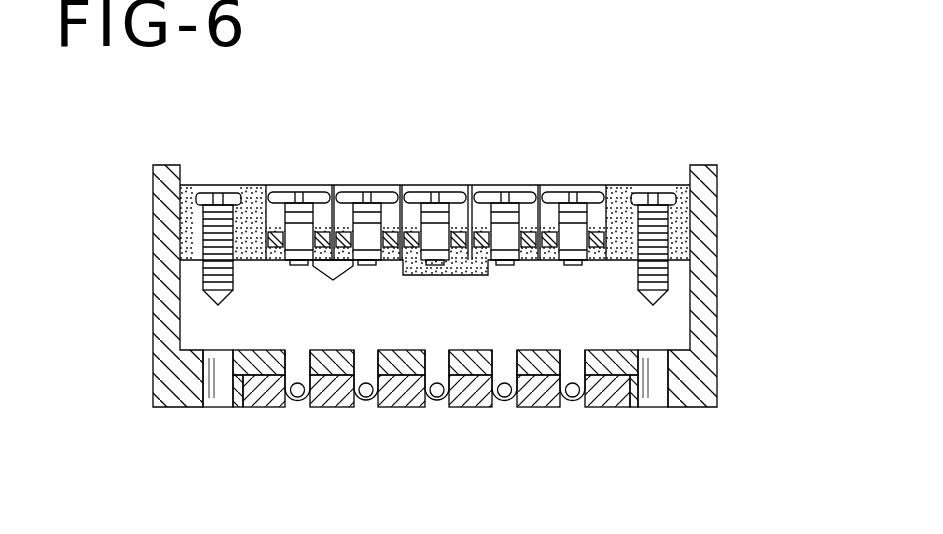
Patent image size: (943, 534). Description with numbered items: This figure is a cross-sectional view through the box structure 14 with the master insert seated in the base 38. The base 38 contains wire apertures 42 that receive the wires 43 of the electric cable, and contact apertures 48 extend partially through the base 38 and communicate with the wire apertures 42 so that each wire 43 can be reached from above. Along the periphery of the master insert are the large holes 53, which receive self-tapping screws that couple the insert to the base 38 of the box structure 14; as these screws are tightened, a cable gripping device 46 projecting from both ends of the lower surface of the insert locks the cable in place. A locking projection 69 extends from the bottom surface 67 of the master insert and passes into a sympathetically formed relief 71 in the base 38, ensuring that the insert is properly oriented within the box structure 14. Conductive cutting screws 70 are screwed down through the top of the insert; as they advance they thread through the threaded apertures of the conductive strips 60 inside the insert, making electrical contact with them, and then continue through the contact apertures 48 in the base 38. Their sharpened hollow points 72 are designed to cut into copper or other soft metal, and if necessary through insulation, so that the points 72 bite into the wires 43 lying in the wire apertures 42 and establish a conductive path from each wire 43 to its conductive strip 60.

The box structure 14 is at (745, 299).
The base 38 is at (538, 366).
The wire apertures 42 is at (349, 405).
The wires 43 is at (368, 404).
The cable gripping device 46 is at (437, 262).
The contact apertures 48 is at (573, 360).
The large holes 53 is at (210, 185).
The conductive strips 60 is at (549, 262).
The bottom surface 67 is at (506, 262).
The locking projection 69 is at (333, 280).
The conductive cutting screws 70 is at (288, 185).
The relief 71 is at (333, 385).
The sharpened hollow points 72 is at (302, 262).